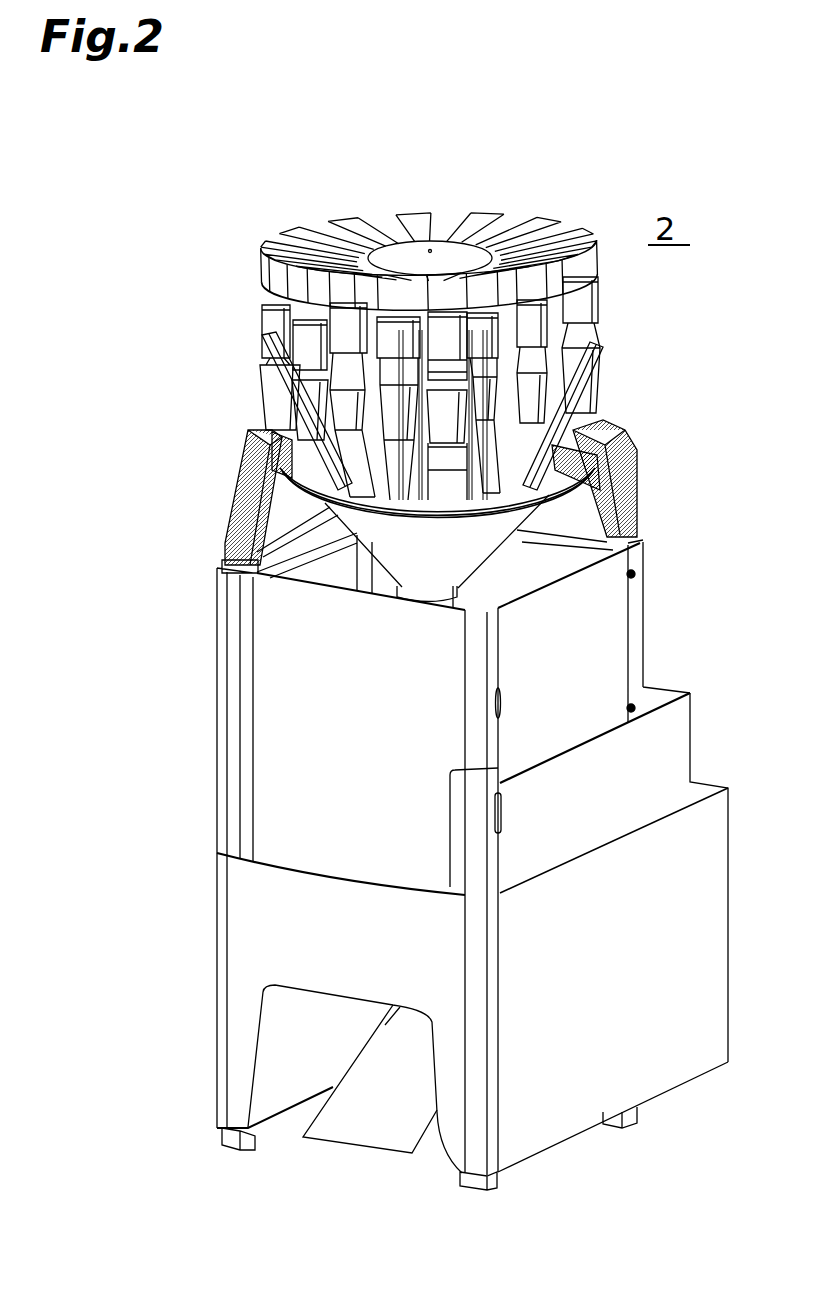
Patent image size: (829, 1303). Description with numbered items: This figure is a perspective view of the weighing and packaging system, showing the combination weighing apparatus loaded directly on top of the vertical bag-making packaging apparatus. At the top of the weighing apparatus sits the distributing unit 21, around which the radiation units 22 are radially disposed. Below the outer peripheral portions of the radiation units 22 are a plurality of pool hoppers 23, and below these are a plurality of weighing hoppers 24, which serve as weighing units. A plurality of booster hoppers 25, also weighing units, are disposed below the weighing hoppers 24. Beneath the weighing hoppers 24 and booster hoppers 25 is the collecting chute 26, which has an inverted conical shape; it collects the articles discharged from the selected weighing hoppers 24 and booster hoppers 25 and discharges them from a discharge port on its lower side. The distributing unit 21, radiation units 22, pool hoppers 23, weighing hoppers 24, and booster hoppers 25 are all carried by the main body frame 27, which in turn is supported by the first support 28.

The distributing unit 21 is at (421, 254).
The radiation units 22 is at (311, 231).
The pool hoppers 23 is at (583, 298).
The weighing hoppers 24 is at (578, 376).
The booster hoppers 25 is at (280, 436).
The collecting chute 26 is at (447, 532).
The main body frame 27 is at (408, 513).
The first support 28 is at (243, 505).